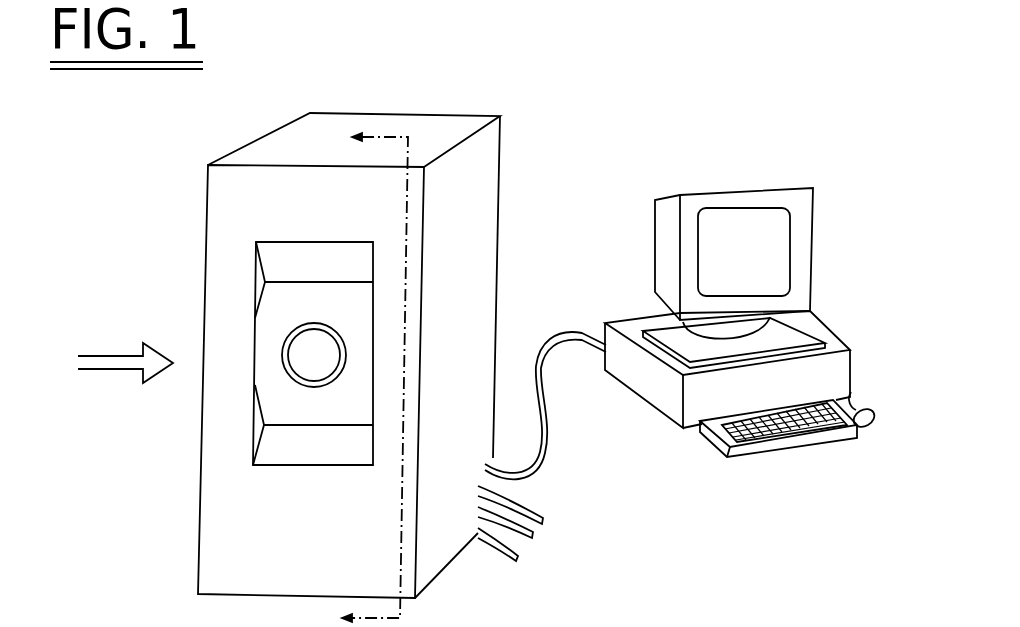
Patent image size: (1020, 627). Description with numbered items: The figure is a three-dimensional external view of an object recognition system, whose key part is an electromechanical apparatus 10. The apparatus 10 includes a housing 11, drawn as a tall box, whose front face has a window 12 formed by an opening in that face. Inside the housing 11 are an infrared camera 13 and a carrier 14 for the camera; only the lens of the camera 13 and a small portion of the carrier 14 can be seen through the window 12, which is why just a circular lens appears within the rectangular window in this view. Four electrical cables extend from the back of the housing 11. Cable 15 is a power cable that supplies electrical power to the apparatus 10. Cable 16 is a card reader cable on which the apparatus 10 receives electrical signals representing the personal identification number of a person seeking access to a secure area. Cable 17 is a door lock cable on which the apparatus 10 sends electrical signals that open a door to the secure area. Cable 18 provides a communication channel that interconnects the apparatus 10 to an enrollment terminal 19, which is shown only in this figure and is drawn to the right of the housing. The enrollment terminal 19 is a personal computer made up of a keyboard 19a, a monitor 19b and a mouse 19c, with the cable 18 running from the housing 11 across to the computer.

The electromechanical apparatus 10 is at (105, 363).
The housing 11 is at (480, 153).
The window 12 is at (373, 390).
The infrared camera 13 is at (314, 343).
The carrier 14 is at (358, 355).
The power cable 15 is at (519, 559).
The card reader cable 16 is at (534, 536).
The door lock cable 17 is at (544, 522).
The communication cable 18 is at (543, 418).
The enrollment terminal 19 is at (807, 380).
The keyboard 19a is at (738, 455).
The monitor 19b is at (725, 222).
The mouse 19c is at (868, 428).